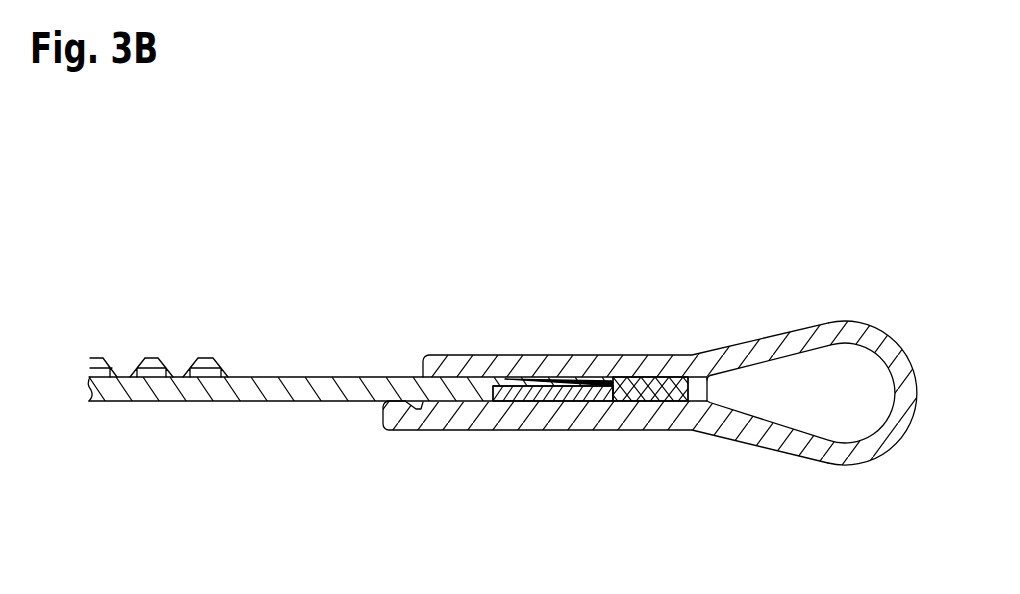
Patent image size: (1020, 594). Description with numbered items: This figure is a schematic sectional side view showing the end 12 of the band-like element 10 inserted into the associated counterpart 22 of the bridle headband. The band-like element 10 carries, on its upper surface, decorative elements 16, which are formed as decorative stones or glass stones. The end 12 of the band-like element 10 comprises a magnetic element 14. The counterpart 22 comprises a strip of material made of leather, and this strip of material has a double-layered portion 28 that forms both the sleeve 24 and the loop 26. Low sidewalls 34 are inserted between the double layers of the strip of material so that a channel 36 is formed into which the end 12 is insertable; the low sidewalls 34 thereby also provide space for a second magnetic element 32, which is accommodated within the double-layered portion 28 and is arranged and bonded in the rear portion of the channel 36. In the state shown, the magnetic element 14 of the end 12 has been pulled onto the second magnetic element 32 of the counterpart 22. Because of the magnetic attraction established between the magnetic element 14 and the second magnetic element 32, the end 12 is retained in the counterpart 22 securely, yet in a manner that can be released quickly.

The band-like element 10 is at (207, 272).
The end of the band-like element 12 is at (453, 393).
The magnetic element 14 is at (558, 397).
The decorative elements 16 is at (135, 357).
The counterpart 22 is at (650, 270).
The sleeve 24 is at (498, 340).
The loop 26 is at (853, 452).
The double-layered portion 28 is at (460, 418).
The second magnetic element 32 is at (638, 394).
The low sidewalls 34 is at (604, 381).
The channel 36 is at (409, 361).